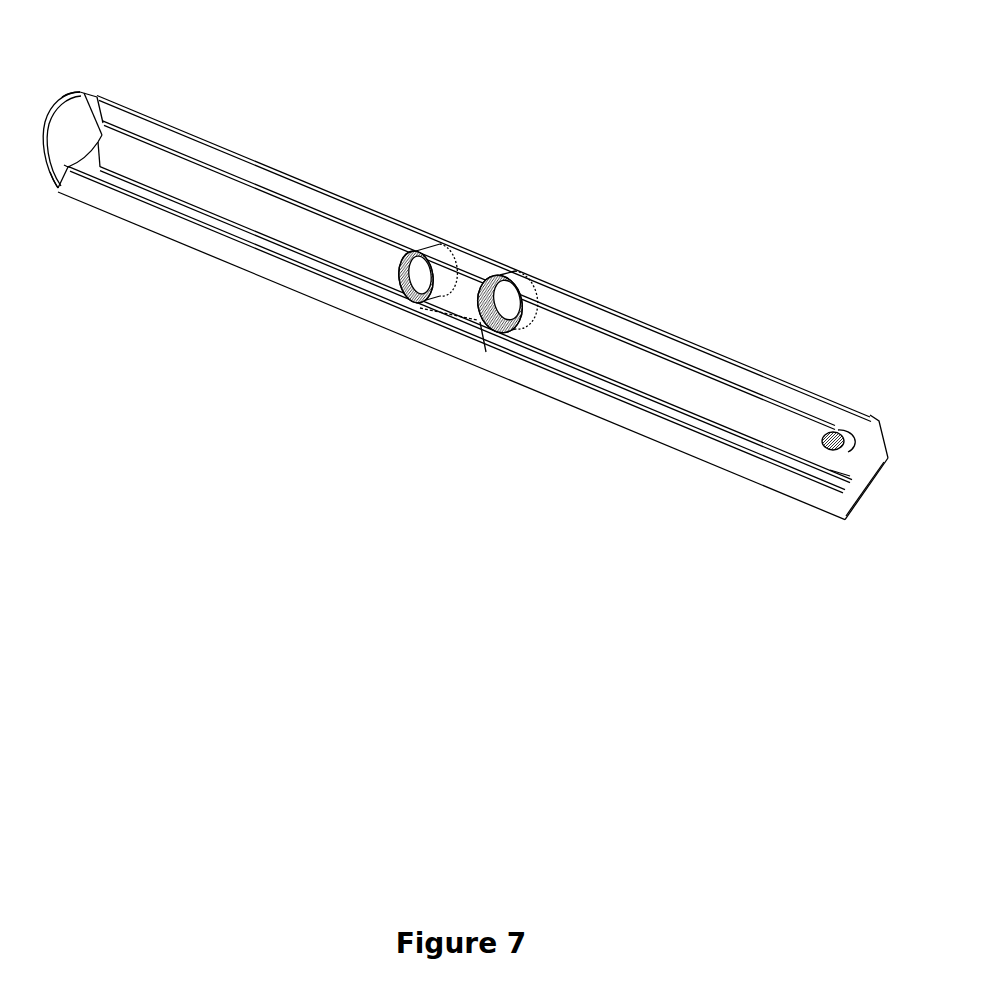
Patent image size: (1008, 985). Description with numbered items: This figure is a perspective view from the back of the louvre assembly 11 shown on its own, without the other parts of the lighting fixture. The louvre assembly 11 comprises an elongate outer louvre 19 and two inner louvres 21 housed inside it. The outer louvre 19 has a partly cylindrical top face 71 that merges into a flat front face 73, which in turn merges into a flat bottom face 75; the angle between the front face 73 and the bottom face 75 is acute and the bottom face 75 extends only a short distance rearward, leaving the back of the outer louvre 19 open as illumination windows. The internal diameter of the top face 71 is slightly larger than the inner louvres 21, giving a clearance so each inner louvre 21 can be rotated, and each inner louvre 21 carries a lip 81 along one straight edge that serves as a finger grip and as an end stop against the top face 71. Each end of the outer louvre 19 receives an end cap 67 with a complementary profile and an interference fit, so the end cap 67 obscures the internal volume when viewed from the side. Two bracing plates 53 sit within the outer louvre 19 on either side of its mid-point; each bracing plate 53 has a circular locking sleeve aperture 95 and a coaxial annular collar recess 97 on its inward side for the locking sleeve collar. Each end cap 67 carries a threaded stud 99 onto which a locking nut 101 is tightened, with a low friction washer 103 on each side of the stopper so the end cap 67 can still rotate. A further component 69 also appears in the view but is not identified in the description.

The louvre assembly 11 is at (678, 148).
The outer louvre 19 is at (232, 265).
The inner louvre 21 is at (207, 164).
The lip 81 is at (293, 202).
The end cap 67 is at (84, 132).
The top face 71 is at (74, 90).
The front face 73 is at (57, 190).
The bottom face 75 is at (69, 172).
The cylindrical sleeve 69 is at (427, 302).
The annular collar recess 97 is at (478, 331).
The locking sleeve aperture 95 is at (497, 314).
The bracing plate 53 is at (517, 342).
The locking nut 101 is at (835, 432).
The threaded stud 99 is at (845, 434).
The low friction washer 103 is at (847, 474).